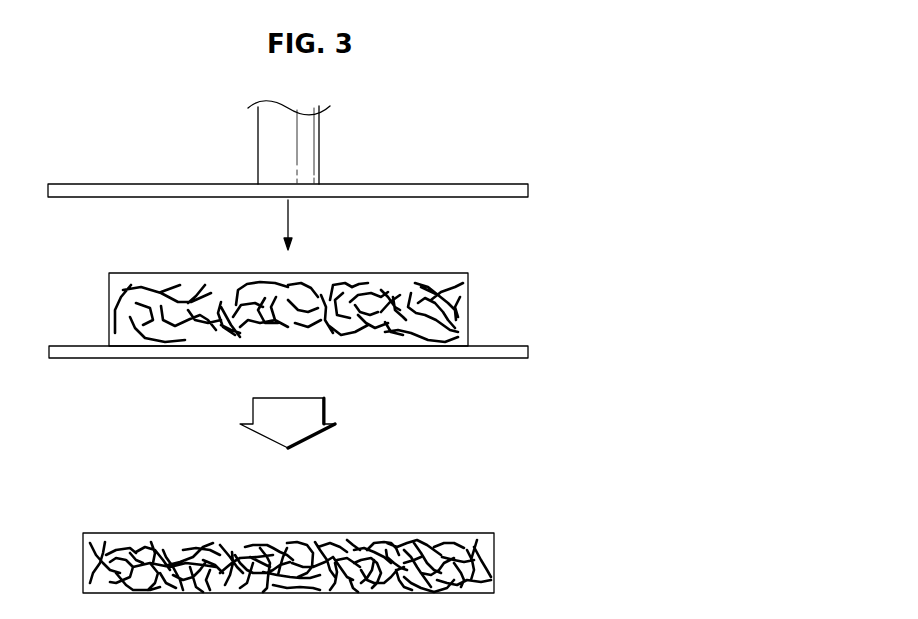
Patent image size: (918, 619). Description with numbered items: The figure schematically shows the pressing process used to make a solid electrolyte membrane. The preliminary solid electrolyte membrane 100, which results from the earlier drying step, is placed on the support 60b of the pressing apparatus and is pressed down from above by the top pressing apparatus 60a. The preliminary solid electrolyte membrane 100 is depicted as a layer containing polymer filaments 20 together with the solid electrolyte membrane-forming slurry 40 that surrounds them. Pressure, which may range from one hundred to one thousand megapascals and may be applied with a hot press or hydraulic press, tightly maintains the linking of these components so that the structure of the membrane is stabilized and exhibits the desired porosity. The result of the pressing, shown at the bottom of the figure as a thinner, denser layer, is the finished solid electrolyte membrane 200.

The top pressing apparatus 60a is at (529, 191).
The support 60b is at (529, 352).
The preliminary solid electrolyte membrane 100 is at (249, 290).
The polymer filament 20 is at (256, 283).
The solid electrolyte membrane-forming slurry 40 is at (362, 280).
The solid electrolyte membrane 200 is at (166, 497).